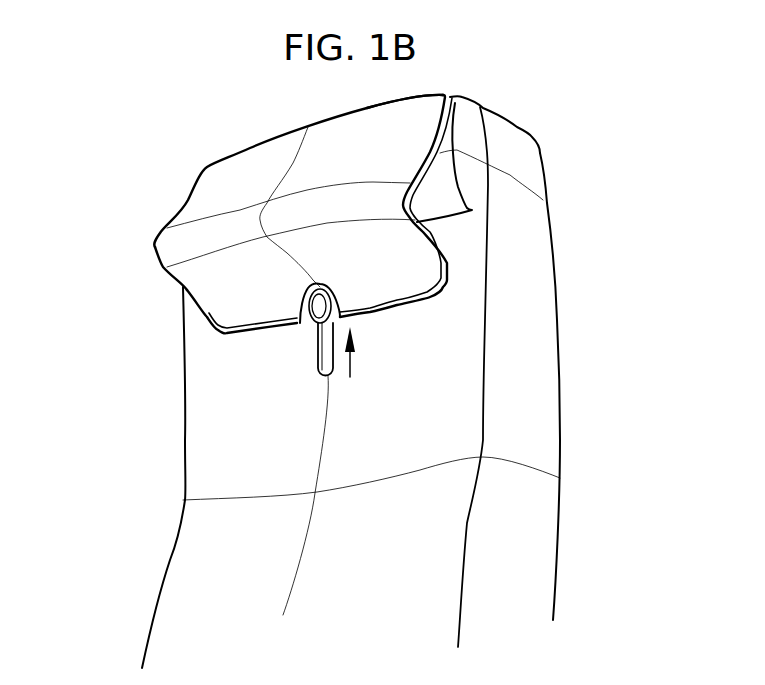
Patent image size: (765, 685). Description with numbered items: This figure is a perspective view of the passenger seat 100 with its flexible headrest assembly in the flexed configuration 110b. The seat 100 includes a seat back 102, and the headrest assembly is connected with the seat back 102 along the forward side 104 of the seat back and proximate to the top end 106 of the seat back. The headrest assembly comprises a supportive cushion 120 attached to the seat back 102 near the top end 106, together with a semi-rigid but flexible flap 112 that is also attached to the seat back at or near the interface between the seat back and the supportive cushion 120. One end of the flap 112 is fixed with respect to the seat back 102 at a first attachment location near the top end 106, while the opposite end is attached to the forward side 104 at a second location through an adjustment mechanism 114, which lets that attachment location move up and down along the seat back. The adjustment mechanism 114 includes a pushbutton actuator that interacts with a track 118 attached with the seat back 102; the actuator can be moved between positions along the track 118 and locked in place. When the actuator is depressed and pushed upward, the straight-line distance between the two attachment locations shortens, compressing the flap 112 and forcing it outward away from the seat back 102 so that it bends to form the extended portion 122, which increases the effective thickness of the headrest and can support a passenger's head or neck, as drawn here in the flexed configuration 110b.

The seat 100 is at (176, 128).
The seat back 102 is at (537, 305).
The forward side of the seat back 104 is at (423, 393).
The top end of the seat back 106 is at (532, 137).
The flexed configuration 110b is at (490, 80).
The flap 112 is at (197, 200).
The adjustment mechanism 114 is at (290, 344).
The track 118 is at (315, 373).
The supportive cushion 120 is at (467, 138).
The extended portion 122 is at (167, 245).